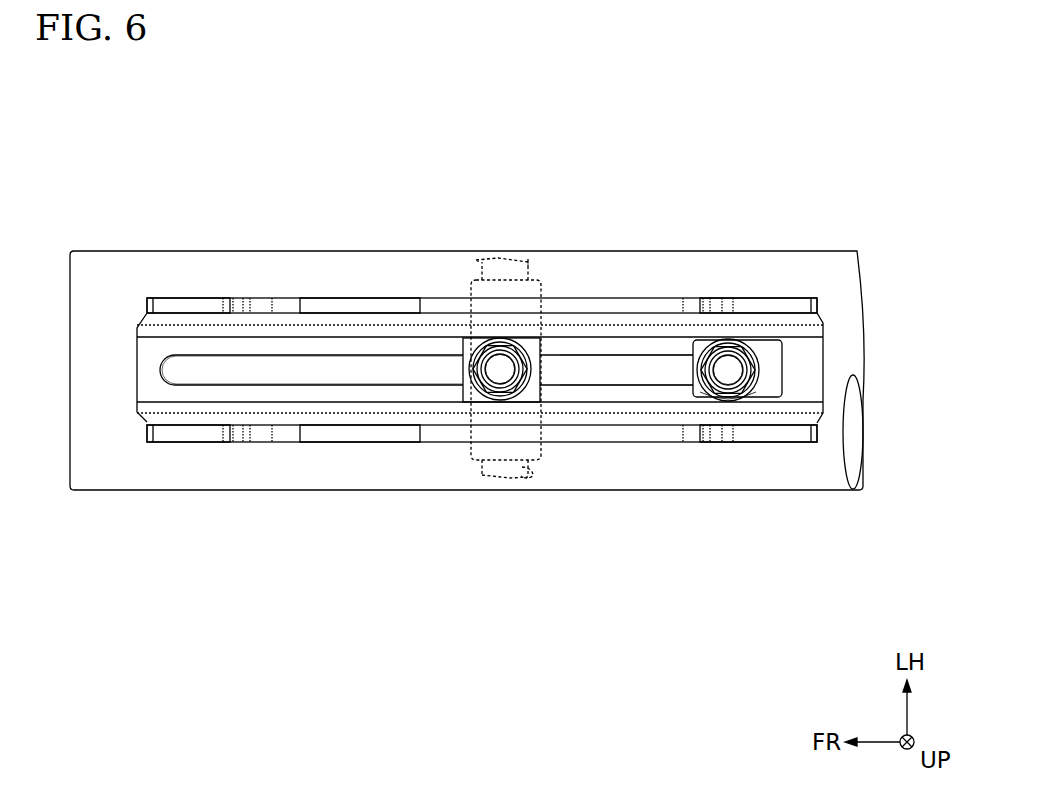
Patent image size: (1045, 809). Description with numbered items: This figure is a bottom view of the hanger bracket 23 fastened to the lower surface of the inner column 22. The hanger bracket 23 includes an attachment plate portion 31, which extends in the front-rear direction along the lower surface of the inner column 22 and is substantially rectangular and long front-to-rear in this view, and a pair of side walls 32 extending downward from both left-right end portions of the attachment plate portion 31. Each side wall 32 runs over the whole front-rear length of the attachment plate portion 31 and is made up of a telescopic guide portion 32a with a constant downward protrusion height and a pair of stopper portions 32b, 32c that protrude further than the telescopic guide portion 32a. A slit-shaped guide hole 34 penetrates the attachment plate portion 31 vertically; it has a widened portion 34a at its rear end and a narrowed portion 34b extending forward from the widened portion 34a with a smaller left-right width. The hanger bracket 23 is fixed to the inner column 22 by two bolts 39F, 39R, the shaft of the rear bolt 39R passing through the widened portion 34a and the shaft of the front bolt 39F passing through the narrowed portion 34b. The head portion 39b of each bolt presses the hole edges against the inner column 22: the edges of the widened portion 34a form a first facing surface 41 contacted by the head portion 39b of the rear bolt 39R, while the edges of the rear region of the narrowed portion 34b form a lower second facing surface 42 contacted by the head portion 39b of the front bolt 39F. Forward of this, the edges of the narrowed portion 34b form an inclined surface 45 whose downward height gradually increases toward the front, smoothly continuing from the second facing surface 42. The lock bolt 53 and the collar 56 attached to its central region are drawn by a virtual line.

The inner column 22 is at (303, 489).
The hanger bracket 23 is at (635, 443).
The attachment plate portion 31 is at (797, 403).
The side walls 32 is at (482, 380).
The telescopic guide portion 32a is at (347, 305).
The stopper portion 32b is at (177, 305).
The stopper portion 32c is at (763, 303).
The guide hole 34 is at (278, 365).
The widened portion 34a is at (783, 358).
The narrowed portion 34b is at (627, 365).
The bolt 39F is at (470, 347).
The bolt 39R is at (751, 356).
The head portion 39b is at (533, 355).
The first facing surface 41 is at (755, 400).
The second facing surface 42 is at (582, 392).
The inclined surface 45 is at (360, 398).
The lock bolt 53 is at (540, 455).
The collar 56 is at (558, 468).